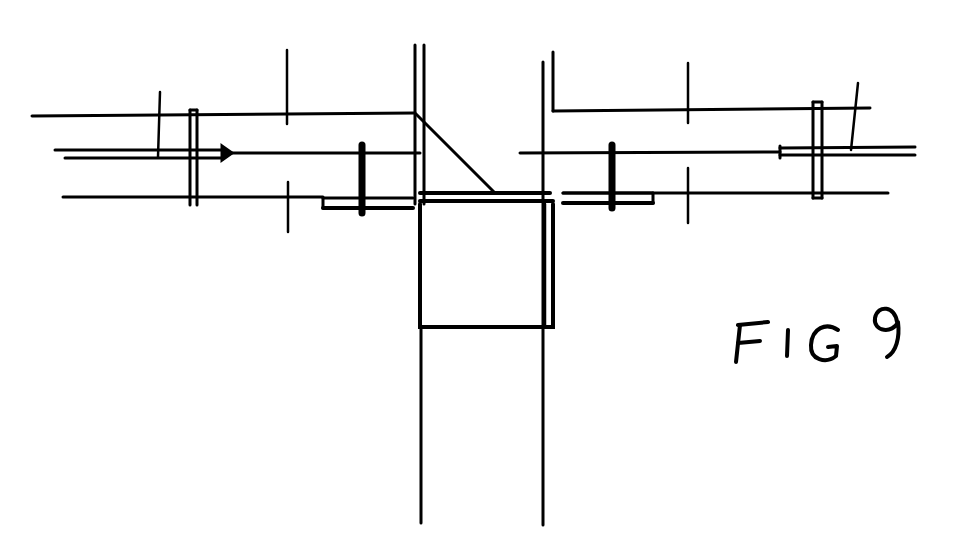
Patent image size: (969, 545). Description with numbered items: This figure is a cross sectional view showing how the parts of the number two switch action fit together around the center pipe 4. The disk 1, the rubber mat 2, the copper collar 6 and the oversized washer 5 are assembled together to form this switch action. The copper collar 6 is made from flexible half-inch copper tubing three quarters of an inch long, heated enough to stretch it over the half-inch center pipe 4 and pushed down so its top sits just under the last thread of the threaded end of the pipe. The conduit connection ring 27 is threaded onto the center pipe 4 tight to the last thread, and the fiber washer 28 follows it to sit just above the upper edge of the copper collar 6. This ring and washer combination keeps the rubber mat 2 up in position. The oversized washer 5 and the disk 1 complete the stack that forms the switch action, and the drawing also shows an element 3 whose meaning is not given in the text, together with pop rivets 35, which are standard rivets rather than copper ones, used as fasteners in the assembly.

The disk 1 is at (506, 106).
The rubber mat 2 is at (487, 145).
The horizontal support beam 3 is at (553, 72).
The center pipe 4 is at (525, 425).
The oversized washer 5 is at (348, 208).
The copper collar 6 is at (456, 286).
The conduit connection ring 27 is at (530, 207).
The fiber washer 28 is at (416, 114).
The pop rivets 35 is at (193, 205).